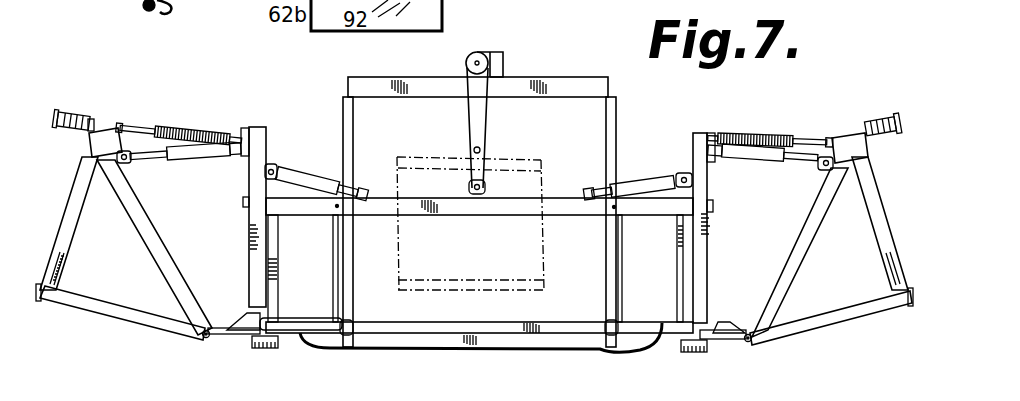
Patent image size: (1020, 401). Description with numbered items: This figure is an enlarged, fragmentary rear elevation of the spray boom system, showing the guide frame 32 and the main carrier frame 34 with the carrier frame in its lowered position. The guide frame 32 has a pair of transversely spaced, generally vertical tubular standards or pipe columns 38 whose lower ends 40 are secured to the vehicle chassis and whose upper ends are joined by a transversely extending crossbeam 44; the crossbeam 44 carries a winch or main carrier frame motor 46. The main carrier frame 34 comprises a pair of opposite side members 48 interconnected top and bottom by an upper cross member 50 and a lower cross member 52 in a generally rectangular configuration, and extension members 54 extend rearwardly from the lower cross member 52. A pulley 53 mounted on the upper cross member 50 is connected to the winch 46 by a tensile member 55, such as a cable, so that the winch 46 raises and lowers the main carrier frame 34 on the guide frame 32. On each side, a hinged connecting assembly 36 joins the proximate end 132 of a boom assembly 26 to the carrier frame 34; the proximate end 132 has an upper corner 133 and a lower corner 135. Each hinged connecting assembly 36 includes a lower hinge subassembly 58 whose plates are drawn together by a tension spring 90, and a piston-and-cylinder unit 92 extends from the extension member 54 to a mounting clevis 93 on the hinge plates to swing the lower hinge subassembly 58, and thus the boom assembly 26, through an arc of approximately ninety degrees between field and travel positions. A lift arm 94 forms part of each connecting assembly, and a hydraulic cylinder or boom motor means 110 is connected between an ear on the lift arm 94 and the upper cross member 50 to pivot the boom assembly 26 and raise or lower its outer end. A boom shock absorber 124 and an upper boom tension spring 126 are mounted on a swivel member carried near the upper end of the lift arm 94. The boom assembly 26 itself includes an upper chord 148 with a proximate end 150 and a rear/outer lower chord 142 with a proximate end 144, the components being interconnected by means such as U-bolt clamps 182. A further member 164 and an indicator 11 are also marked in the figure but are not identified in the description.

The upper chord 148 is at (60, 110).
The proximate end of upper chord 150 is at (92, 118).
The upper corner 133 is at (102, 128).
The upper boom tension spring 126 is at (163, 129).
The lift arm 94 is at (266, 119).
The standards or pipe columns 38 is at (341, 110).
The hydraulic cylinder or boom motor means 110 is at (291, 178).
The boom shock absorber 124 is at (201, 159).
The section line 11 is at (205, 224).
The winch or main carrier frame motor 46 is at (501, 54).
The crossbeam 44 is at (558, 78).
The guide frame 32 is at (607, 80).
The tensile member 55 is at (490, 122).
The pulley 53 is at (487, 184).
The upper cross member 50 is at (588, 216).
The main carrier frame 34 is at (320, 215).
The side members 48 is at (278, 277).
The piston-and-cylinder units 92 is at (302, 318).
The lower cross member 52 is at (370, 328).
The extension members 54 is at (606, 322).
The lower ends 40 is at (598, 351).
The mounting clevises 93 is at (238, 314).
The tension spring 90 is at (272, 349).
The hinged connecting assemblies 36 is at (236, 340).
The lower corner 135 is at (202, 341).
The boom assemblies 26 is at (123, 323).
The rear/outer lower chord 142 is at (115, 306).
The outer arm 164 is at (78, 228).
The proximate end 132 is at (174, 251).
The U-bolt clamps 182 is at (880, 118).
The lower hinge subassembly 58 is at (715, 351).
The proximate end of rear/outer lower chord 144 is at (749, 343).